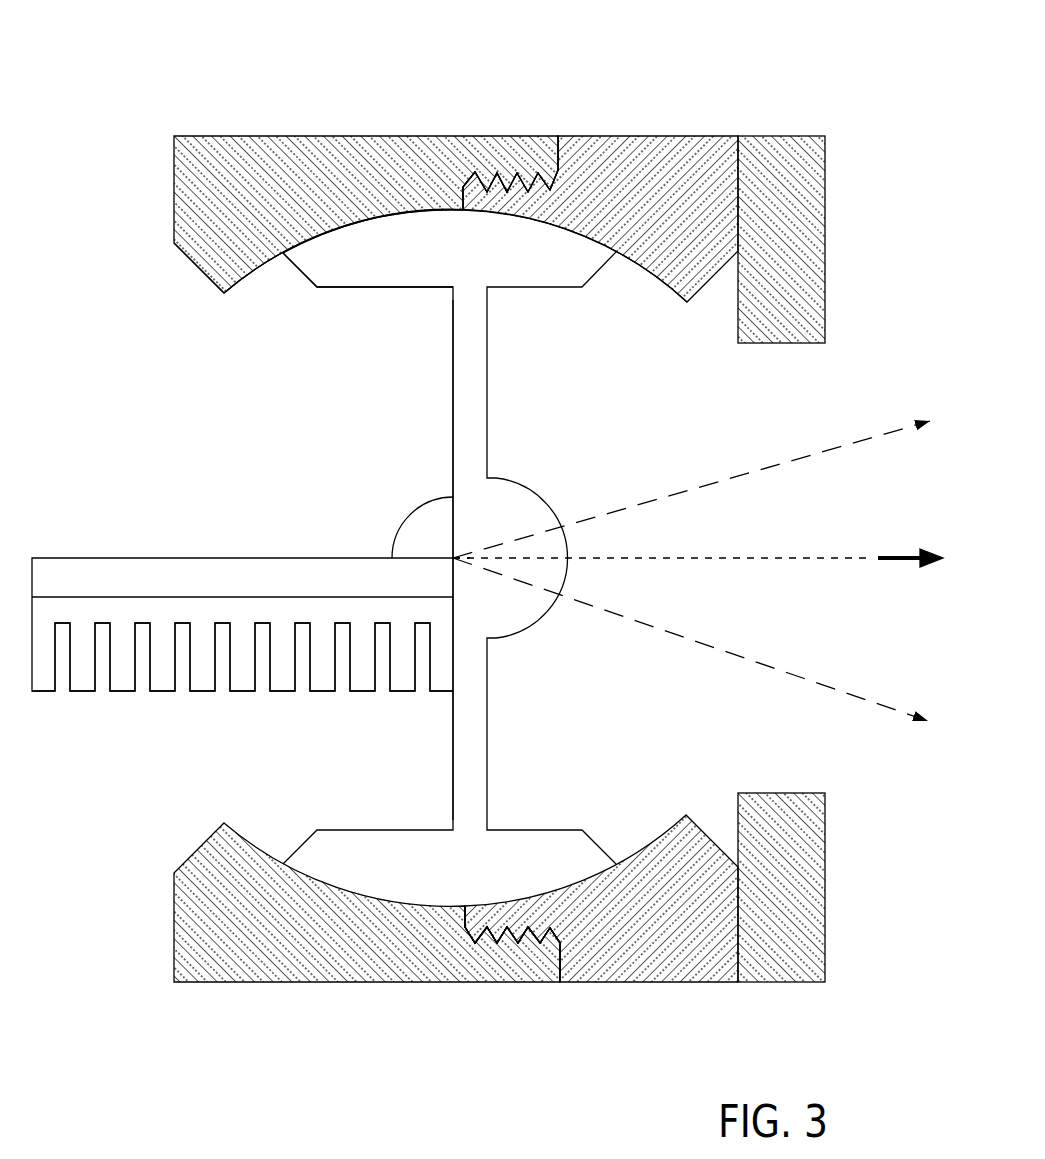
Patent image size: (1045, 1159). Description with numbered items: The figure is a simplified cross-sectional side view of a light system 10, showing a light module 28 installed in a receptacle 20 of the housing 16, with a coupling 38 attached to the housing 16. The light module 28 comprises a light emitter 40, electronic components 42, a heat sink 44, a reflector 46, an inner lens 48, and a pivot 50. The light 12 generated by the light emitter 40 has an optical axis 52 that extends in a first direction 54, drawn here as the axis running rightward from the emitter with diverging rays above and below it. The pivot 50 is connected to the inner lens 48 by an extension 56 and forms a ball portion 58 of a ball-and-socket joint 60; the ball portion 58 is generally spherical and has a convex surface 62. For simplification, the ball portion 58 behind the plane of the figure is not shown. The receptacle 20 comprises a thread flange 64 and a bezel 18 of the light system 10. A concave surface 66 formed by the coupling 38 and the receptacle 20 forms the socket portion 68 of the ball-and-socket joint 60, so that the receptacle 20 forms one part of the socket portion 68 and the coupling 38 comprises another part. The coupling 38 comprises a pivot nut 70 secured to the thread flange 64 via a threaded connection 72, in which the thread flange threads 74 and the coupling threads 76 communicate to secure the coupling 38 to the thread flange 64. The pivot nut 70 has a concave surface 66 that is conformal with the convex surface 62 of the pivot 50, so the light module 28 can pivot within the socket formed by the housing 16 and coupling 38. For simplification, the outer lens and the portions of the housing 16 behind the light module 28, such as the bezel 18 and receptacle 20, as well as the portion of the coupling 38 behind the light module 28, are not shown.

The light system 10 is at (228, 42).
The light 12 is at (647, 500).
The housing 16 is at (725, 78).
The bezel 18 is at (802, 137).
The receptacle 20 is at (713, 135).
The light module 28 is at (287, 473).
The coupling 38 is at (425, 133).
The light emitter 40 is at (428, 557).
The electronic components 42 is at (120, 568).
The heat sink 44 is at (245, 683).
The reflector 46 is at (443, 493).
The inner lens 48 is at (525, 630).
The pivot 50 is at (285, 835).
The optical axis 52 is at (647, 557).
The first direction 54 is at (898, 563).
The extension 56 is at (463, 350).
The ball portion 58 is at (407, 850).
The ball-and-socket joint 60 is at (288, 317).
The convex surface 62 is at (390, 217).
The thread flange 64 is at (643, 137).
The concave surface 66 is at (268, 265).
The socket portion 68 is at (667, 830).
The pivot nut 70 is at (185, 248).
The threaded connection 72 is at (485, 990).
The thread flange threads 74 is at (497, 918).
The coupling threads 76 is at (507, 945).